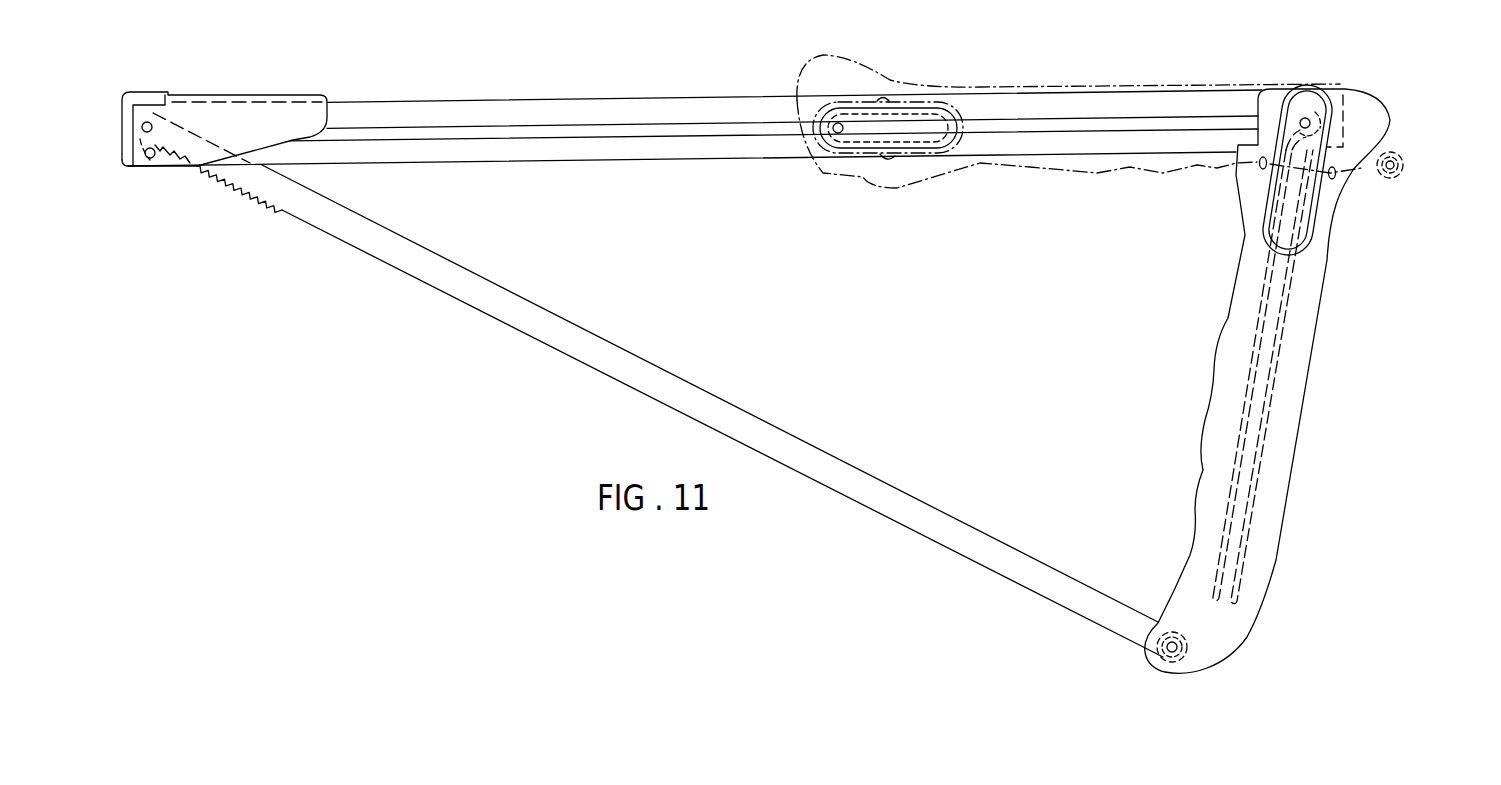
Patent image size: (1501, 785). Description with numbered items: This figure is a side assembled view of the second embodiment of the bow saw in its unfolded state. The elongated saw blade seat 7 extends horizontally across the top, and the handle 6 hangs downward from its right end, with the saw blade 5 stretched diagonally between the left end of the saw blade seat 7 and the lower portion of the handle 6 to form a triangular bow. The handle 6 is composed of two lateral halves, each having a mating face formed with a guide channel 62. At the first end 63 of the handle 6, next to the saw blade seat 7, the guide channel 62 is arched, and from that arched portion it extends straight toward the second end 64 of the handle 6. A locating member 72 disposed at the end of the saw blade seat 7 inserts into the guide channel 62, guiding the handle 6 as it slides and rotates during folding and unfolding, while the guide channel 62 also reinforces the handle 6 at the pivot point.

The saw blade 5 is at (707, 402).
The handle 6 is at (1300, 367).
The saw blade seat 7 is at (692, 112).
The guide channel 62 is at (1265, 337).
The first end of the handle 63 is at (1358, 96).
The second end of the handle 64 is at (1243, 635).
The locating member 72 is at (1333, 120).